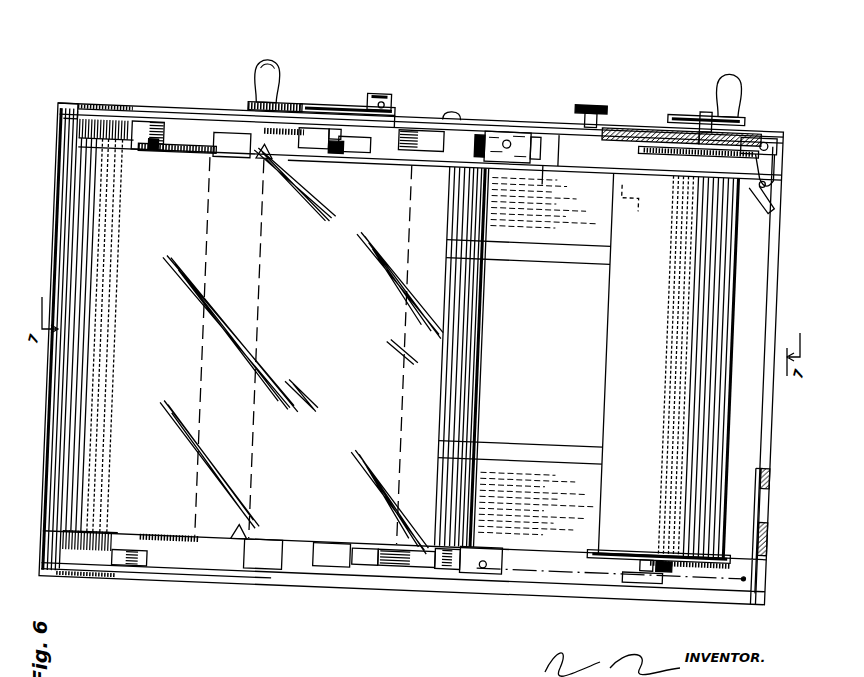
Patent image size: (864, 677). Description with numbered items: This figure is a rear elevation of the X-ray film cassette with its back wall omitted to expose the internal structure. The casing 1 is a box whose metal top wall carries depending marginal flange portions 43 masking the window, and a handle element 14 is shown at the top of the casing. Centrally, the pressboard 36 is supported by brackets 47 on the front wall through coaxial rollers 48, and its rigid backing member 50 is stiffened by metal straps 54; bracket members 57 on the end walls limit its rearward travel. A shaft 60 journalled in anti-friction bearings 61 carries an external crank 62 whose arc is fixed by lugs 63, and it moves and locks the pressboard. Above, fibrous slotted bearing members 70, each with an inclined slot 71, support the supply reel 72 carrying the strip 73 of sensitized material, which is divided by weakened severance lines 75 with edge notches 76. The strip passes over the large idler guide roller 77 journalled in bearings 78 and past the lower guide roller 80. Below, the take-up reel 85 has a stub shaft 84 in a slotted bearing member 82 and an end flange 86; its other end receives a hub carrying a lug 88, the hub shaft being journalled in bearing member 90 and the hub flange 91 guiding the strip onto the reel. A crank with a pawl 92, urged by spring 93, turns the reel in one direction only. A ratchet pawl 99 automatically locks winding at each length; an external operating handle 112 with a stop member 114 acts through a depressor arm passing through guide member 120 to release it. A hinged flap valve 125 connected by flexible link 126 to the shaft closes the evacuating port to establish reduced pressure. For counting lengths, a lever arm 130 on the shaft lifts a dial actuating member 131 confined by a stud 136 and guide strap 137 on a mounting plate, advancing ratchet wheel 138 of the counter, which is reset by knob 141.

The casing 1 is at (165, 117).
The handle 14 is at (276, 66).
The pressboard 36 is at (764, 487).
The marginal flange portions 43 is at (62, 103).
The brackets 47 is at (506, 130).
The coaxial rollers 48 is at (478, 133).
The backing member 50 is at (546, 178).
The metal straps 54 is at (527, 232).
The bracket members 57 is at (222, 133).
The shaft 60 is at (380, 85).
The anti-friction bearings 61 is at (397, 113).
The crank 62 is at (330, 110).
The lugs 63 is at (447, 112).
The slotted bearing members 70 is at (418, 135).
The slot 71 is at (393, 580).
The reel 72 is at (525, 138).
The strip 73 is at (440, 160).
The weakened severance line 75 is at (262, 296).
The notches 76 is at (268, 160).
The idler guide roller 77 is at (190, 140).
The bearings 78 is at (150, 120).
The lower guide roller 80 is at (641, 560).
The slotted bearing member 82 is at (639, 588).
The stub shaft 84 is at (655, 582).
The take-up reel 85 is at (742, 300).
The end flange 86 is at (690, 580).
The lug 88 is at (630, 180).
The bearing member 90 is at (650, 128).
The hub flange 91 is at (576, 143).
The pawl 92 is at (681, 112).
The spring 93 is at (718, 78).
The ratchet pawl 99 is at (779, 161).
The operating handle 112 is at (583, 104).
The stop member 114 is at (606, 140).
The guide member 120 is at (756, 143).
The hinged flap valve 125 is at (752, 476).
The flexible link 126 is at (546, 584).
The lever arm 130 is at (365, 157).
The dial actuating member 131 is at (335, 157).
The stud 136 is at (347, 157).
The guide strap 137 is at (318, 157).
The ratchet wheel 138 is at (270, 130).
The knob 141 is at (265, 105).